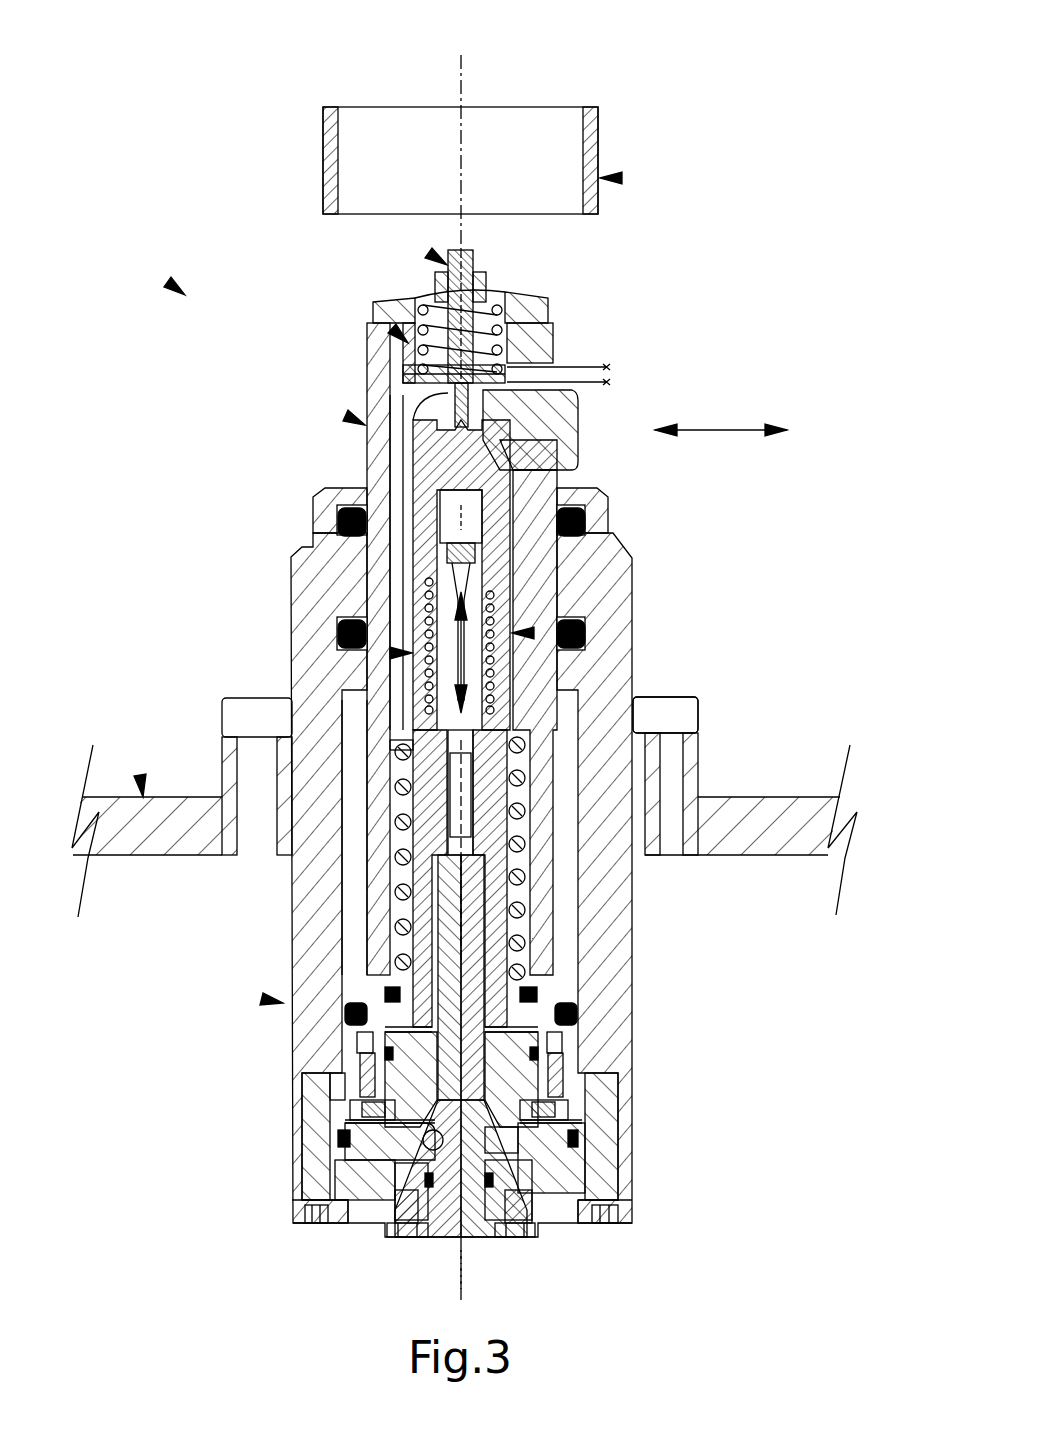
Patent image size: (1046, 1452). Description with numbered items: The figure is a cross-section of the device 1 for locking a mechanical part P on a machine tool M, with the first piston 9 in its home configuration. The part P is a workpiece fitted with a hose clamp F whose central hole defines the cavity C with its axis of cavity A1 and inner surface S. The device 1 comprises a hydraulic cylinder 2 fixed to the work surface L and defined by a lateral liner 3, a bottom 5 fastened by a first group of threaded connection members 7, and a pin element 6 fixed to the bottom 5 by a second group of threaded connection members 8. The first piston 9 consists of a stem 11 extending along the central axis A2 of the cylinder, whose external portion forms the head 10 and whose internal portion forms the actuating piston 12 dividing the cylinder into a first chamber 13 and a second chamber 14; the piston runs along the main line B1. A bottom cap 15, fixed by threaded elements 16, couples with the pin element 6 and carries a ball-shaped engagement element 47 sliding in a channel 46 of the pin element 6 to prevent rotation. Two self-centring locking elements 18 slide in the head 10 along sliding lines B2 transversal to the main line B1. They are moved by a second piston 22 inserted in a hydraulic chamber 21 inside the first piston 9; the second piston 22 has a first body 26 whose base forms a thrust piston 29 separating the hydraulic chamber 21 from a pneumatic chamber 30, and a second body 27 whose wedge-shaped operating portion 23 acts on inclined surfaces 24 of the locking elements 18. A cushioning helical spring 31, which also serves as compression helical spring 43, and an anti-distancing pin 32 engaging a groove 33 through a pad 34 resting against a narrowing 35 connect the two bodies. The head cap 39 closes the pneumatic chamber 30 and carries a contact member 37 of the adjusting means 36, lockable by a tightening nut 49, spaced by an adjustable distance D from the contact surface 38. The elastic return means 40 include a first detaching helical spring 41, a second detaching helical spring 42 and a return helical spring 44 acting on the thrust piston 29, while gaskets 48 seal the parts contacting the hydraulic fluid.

The device 1 is at (170, 283).
The hydraulic cylinder 2 is at (262, 999).
The lateral liner 3 is at (303, 962).
The bottom 5 is at (350, 1152).
The pin element 6 is at (413, 1240).
The first group of threaded connection members 7 is at (590, 1200).
The second group of threaded connection members 8 is at (545, 1215).
The first piston 9 is at (343, 416).
The head 10 is at (540, 321).
The stem 11 is at (372, 713).
The actuating piston 12 is at (360, 1072).
The first chamber 13 is at (345, 1107).
The second chamber 14 is at (355, 878).
The bottom cap 15 is at (350, 1132).
The group of threaded elements 16 is at (612, 1135).
The self-centring locking elements 18 is at (580, 418).
The hydraulic chamber 21 is at (500, 1062).
The second piston 22 is at (390, 653).
The operating portion 23 is at (455, 432).
The inclined surfaces 24 is at (515, 458).
The first body 26 is at (490, 798).
The second body 27 is at (482, 530).
The thrust piston 29 is at (540, 998).
The pneumatic chamber 30 is at (527, 933).
The cushioning helical spring 31 is at (600, 698).
The anti-distancing pin 32 is at (560, 752).
The groove 33 is at (590, 505).
The pad 34 is at (355, 500).
The narrowing 35 is at (425, 562).
The adjusting means 36 is at (428, 254).
The contact member 37 is at (470, 270).
The contact surface 38 is at (420, 372).
The head cap 39 is at (540, 310).
The elastic return means 40 is at (390, 330).
The first detaching helical spring 41 is at (436, 290).
The second detaching helical spring 42 is at (418, 306).
The compression helical spring 43 is at (665, 715).
The return helical spring 44 is at (527, 860).
The channel 46 is at (348, 1035).
The engagement element 47 is at (425, 1148).
The gaskets 48 is at (340, 636).
The tightening nut 49 is at (484, 284).
The inner surface S is at (335, 130).
The axis of cavity A1 is at (465, 72).
The central axis A2 is at (478, 1283).
The cavity C is at (548, 130).
The hose clamp F is at (593, 142).
The mechanical part P is at (620, 178).
The distance D is at (573, 374).
The main line B1 is at (470, 632).
The sliding lines B2 is at (727, 430).
The machine tool M is at (140, 776).
The work surface L is at (148, 835).